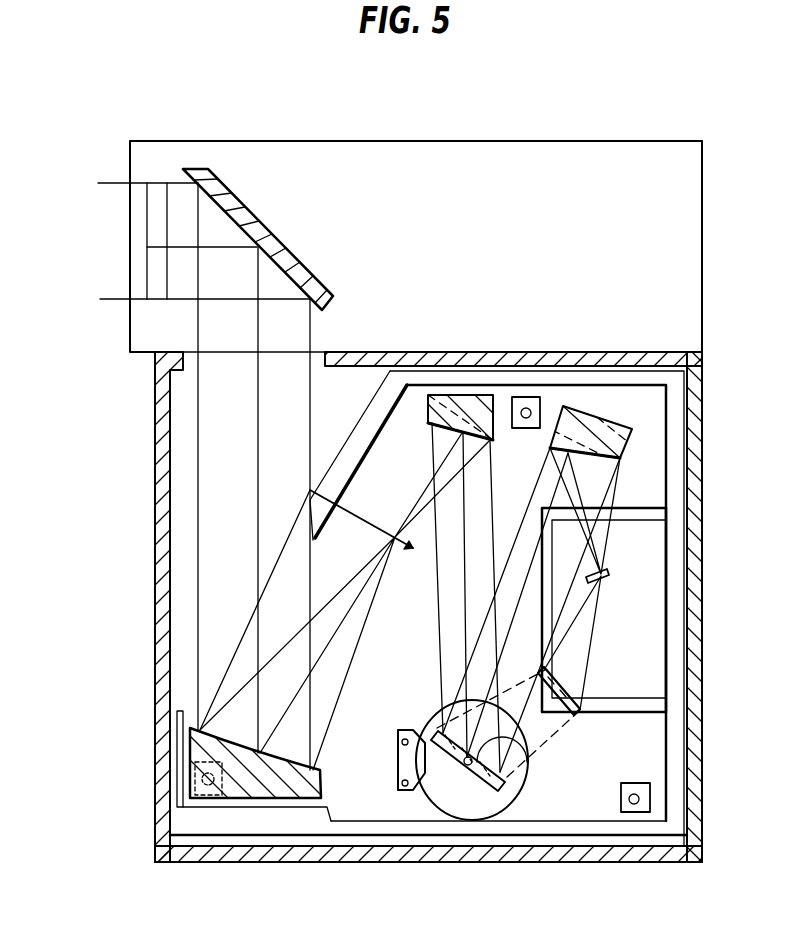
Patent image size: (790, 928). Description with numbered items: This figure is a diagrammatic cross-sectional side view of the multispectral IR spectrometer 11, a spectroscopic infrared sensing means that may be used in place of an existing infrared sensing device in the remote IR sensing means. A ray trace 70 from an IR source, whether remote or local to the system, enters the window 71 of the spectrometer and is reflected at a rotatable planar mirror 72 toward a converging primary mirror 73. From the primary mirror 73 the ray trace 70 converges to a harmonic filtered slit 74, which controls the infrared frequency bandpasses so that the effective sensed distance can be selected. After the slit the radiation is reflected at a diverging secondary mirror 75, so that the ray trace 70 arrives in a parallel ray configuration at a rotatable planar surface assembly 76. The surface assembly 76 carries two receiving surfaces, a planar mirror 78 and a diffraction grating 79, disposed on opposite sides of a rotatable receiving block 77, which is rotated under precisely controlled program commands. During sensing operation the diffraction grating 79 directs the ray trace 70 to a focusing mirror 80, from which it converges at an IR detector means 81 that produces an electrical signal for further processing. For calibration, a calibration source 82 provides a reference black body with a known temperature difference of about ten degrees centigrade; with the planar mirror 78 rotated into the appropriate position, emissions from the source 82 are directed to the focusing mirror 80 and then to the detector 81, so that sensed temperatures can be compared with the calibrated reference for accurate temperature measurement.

The multispectral IR spectrometer 11 is at (535, 141).
The ray trace 70 is at (118, 183).
The window 71 is at (158, 290).
The rotatable planar mirror 72 is at (276, 232).
The converging primary mirror 73 is at (197, 777).
The harmonic filtered slit 74 is at (393, 538).
The diverging secondary mirror 75 is at (460, 406).
The rotatable planar surface assembly 76 is at (413, 798).
The rotatable receiving block 77 is at (430, 735).
The planar mirror 78 is at (468, 766).
The diffraction grating 79 is at (528, 757).
The focusing mirror 80 is at (602, 426).
The IR detector means 81 is at (604, 583).
The calibration source 82 is at (562, 693).